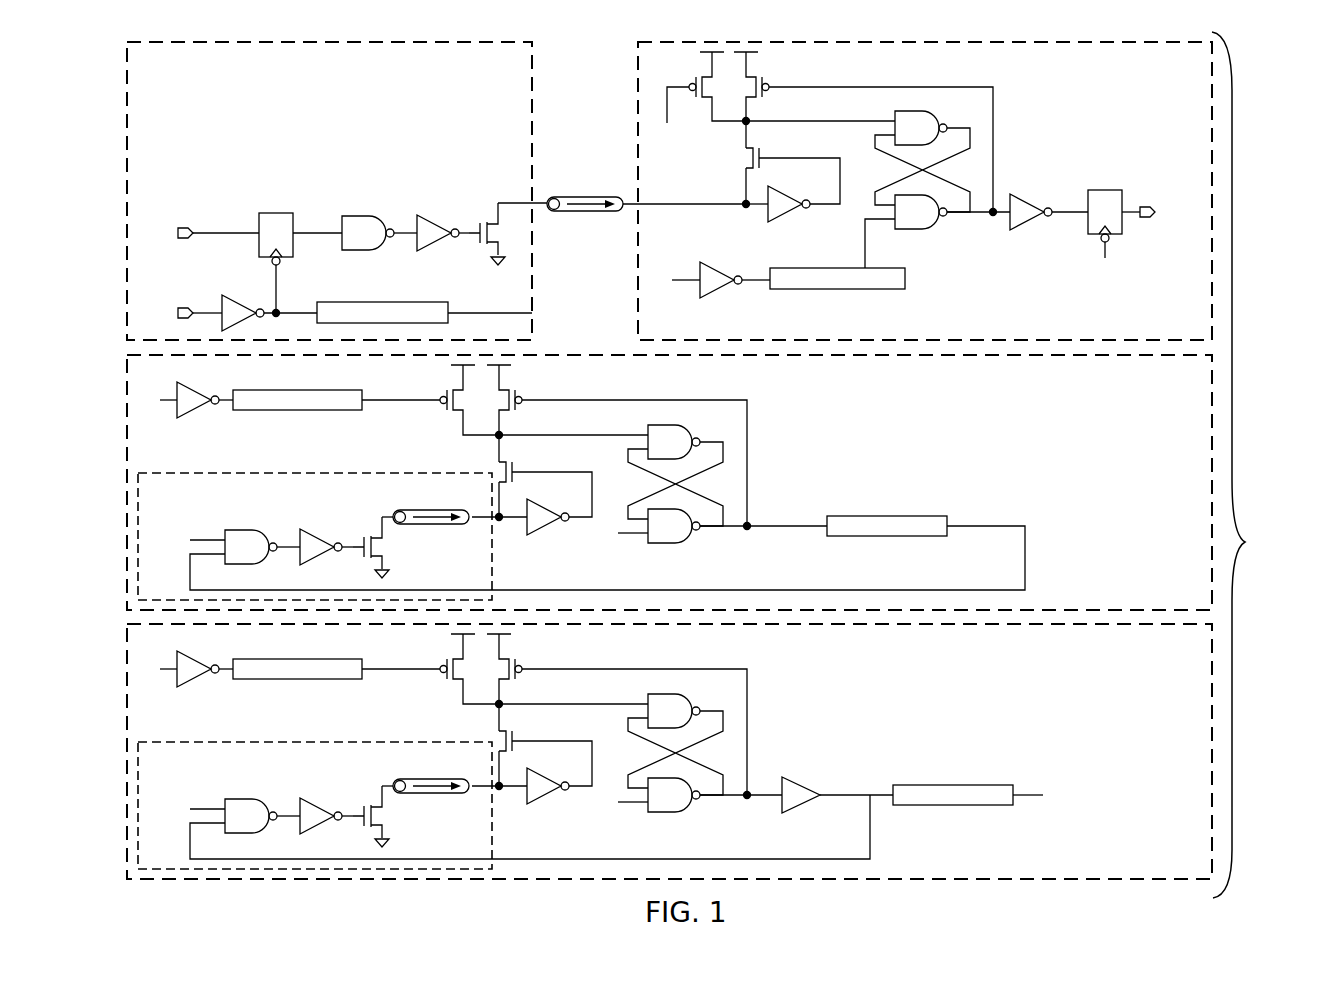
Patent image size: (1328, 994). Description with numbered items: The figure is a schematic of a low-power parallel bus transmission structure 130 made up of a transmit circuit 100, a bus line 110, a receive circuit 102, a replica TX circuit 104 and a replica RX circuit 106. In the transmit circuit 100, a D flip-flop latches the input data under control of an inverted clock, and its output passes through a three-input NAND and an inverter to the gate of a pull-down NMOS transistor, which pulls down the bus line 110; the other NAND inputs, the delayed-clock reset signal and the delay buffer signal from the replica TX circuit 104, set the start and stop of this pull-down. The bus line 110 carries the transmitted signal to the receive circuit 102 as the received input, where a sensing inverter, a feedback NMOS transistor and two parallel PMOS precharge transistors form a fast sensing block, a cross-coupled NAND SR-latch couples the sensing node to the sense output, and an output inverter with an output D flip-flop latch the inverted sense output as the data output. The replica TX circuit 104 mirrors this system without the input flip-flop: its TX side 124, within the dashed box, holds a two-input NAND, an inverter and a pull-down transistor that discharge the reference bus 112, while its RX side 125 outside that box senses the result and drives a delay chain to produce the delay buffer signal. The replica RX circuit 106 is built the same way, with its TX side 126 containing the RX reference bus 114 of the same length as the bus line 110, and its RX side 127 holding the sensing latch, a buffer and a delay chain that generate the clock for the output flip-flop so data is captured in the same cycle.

The transmit circuit 100 is at (127, 93).
The receive circuit 102 is at (894, 191).
The replica TX circuit 104 is at (638, 482).
The replica RX circuit 106 is at (638, 751).
The bus line 110 is at (586, 222).
The reference bus 112 is at (415, 540).
The RX reference bus 114 is at (437, 814).
The TX side of replica TX circuit 124 is at (544, 536).
The RX side of replica TX circuit 125 is at (140, 440).
The TX side of replica RX circuit 126 is at (467, 805).
The RX side of replica RX circuit 127 is at (140, 709).
The low-power parallel bus transmission structure 130 is at (676, 465).